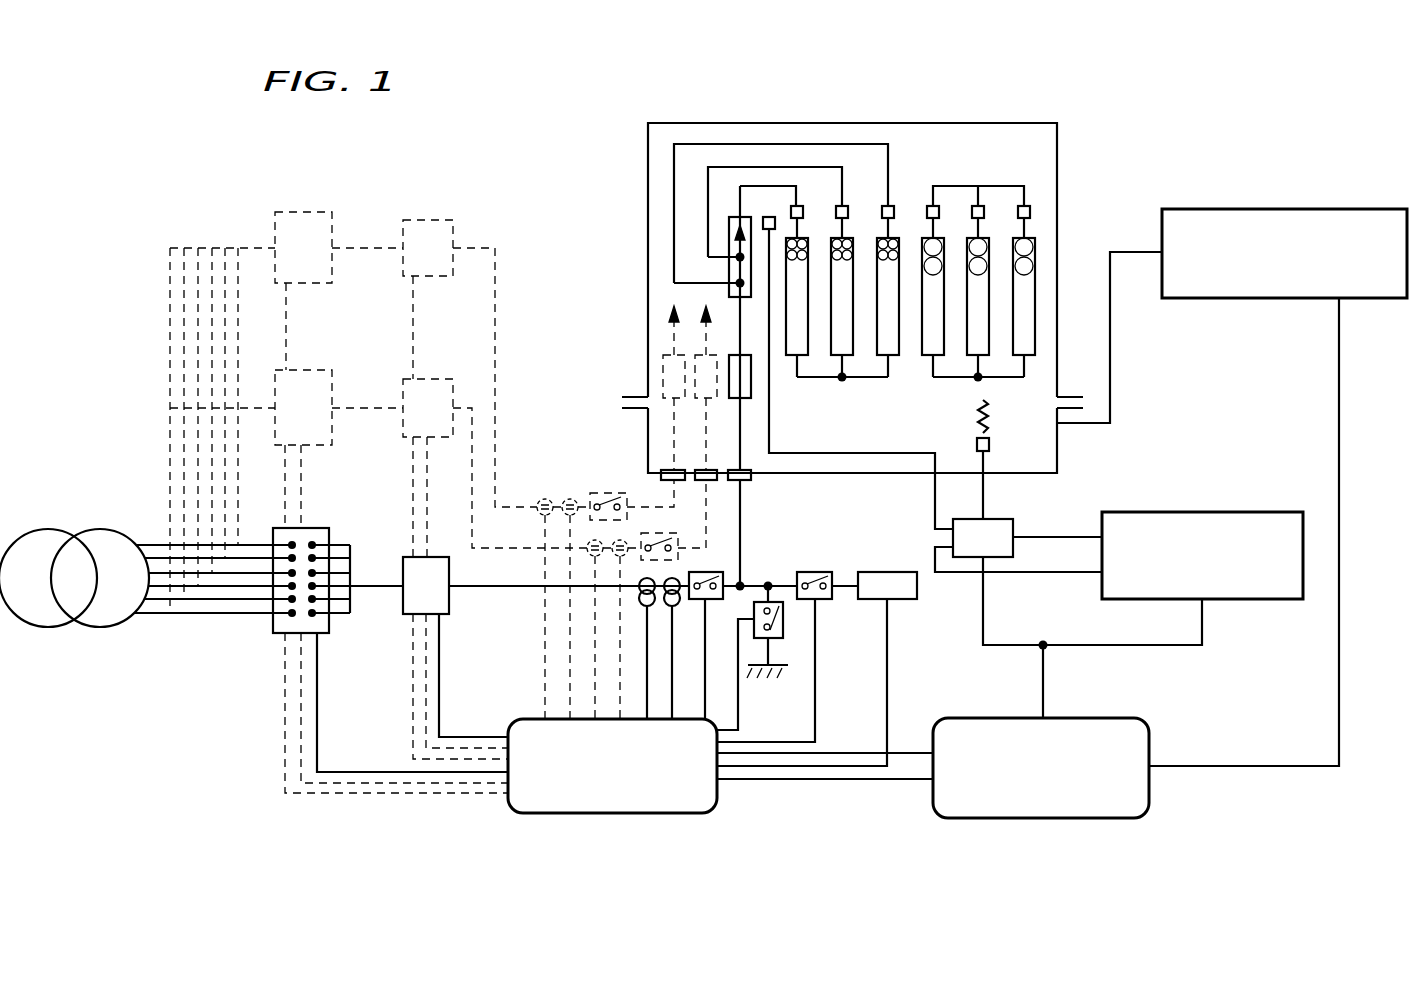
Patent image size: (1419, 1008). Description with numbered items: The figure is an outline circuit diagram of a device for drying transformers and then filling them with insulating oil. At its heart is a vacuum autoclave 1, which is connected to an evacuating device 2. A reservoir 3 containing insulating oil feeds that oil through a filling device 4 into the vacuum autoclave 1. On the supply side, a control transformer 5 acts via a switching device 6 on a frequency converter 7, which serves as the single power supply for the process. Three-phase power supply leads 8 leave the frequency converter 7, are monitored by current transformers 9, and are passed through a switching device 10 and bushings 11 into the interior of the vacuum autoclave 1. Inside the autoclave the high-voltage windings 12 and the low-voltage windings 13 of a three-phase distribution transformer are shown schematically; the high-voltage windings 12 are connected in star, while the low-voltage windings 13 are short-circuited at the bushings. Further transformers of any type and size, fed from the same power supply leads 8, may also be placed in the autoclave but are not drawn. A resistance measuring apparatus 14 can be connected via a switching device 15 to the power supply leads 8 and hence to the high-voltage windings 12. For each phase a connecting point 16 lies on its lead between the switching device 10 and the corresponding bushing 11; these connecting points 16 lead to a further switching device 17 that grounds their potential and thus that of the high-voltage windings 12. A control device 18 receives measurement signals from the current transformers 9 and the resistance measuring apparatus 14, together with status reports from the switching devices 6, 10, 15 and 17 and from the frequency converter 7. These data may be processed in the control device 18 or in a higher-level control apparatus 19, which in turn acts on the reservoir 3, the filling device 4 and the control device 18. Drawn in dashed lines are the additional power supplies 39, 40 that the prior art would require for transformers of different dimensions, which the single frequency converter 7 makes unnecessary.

The vacuum autoclave 1 is at (868, 321).
The evacuating device 2 is at (1288, 209).
The reservoir 3 is at (1203, 512).
The filling device 4 is at (1013, 521).
The control transformer 5 is at (33, 613).
The switching device 6 is at (278, 625).
The frequency converter 7 is at (410, 605).
The three-phase power supply leads 8 is at (520, 586).
The current transformers 9 is at (628, 608).
The switching device 10 is at (712, 570).
The bushings 11 is at (751, 478).
The high-voltage windings 12 is at (817, 238).
The low-voltage windings 13 is at (953, 228).
The resistance measuring apparatus 14 is at (883, 570).
The switching device 15 is at (813, 570).
The connecting points 16 is at (743, 582).
The switching device 17 is at (783, 620).
The control device 18 is at (613, 813).
The control apparatus 19 is at (1037, 818).
The power supply 39 is at (378, 405).
The power supply 40 is at (380, 245).